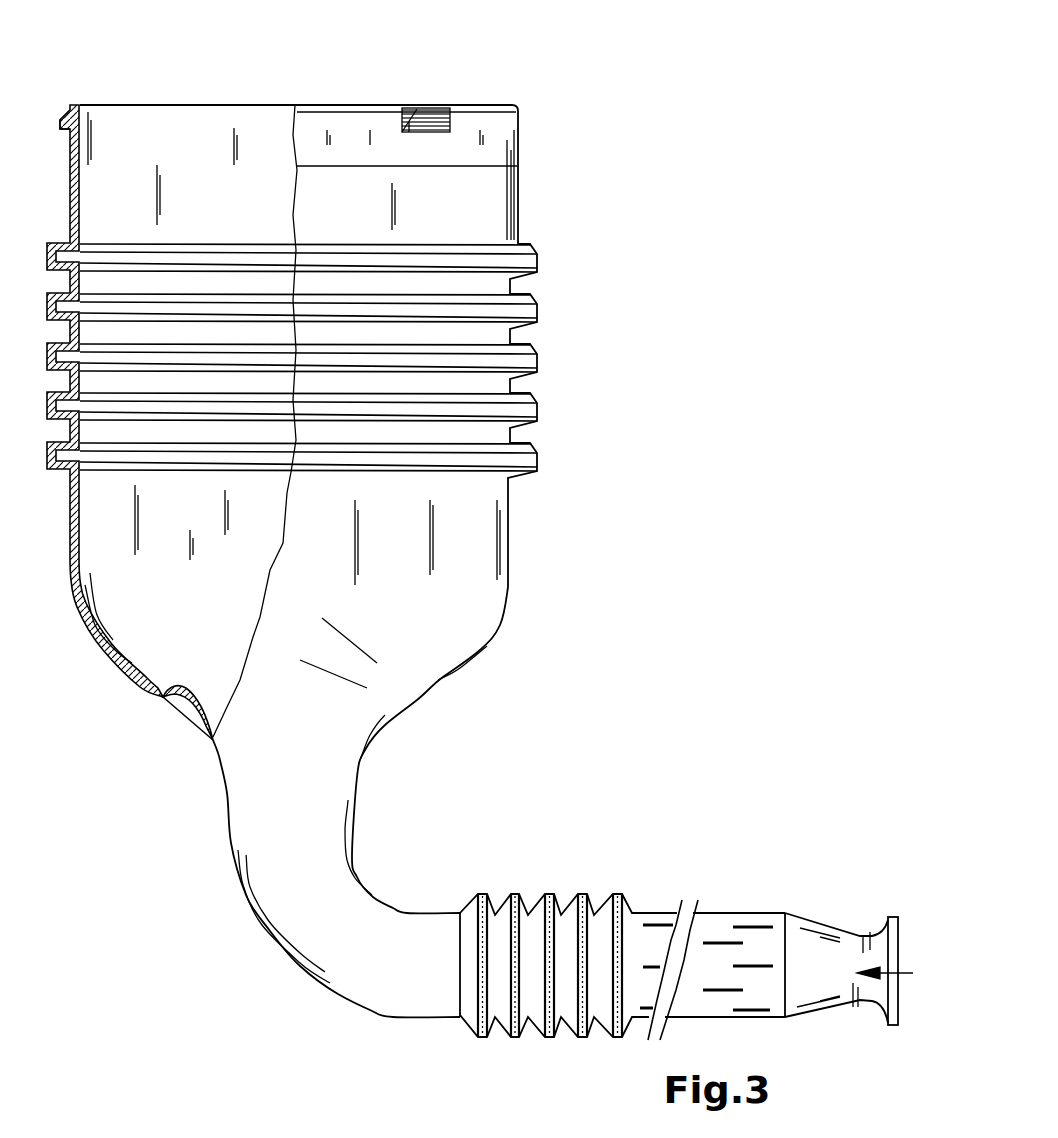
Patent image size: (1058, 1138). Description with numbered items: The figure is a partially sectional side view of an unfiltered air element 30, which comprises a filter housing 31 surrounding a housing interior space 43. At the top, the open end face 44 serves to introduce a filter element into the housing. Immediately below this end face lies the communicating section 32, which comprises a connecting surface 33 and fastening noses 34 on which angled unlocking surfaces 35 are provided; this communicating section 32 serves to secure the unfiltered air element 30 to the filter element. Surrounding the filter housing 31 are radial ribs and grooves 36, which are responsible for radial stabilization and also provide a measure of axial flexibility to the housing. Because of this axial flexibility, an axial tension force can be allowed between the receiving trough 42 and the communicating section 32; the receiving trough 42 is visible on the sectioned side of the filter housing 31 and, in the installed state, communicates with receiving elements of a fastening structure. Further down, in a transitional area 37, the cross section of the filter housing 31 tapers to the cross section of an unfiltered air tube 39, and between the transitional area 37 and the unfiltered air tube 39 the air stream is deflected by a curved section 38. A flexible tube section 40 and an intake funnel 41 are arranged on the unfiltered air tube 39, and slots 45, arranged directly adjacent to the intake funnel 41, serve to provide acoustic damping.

The unfiltered air element 30 is at (648, 148).
The filter housing 31 is at (505, 190).
The communicating section 32 is at (495, 111).
The connecting surface 33 is at (506, 147).
The fastening noses 34 is at (62, 118).
The angled unlocking surfaces 35 is at (405, 130).
The radial ribs and grooves 36 is at (557, 403).
The transitional area 37 is at (437, 708).
The curved section 38 is at (375, 840).
The unfiltered air tube 39 is at (404, 994).
The flexible tube section 40 is at (476, 885).
The intake funnel 41 is at (876, 940).
The receiving trough 42 is at (187, 701).
The housing interior space 43 is at (117, 184).
The open end face 44 is at (152, 106).
The slots 45 is at (752, 923).